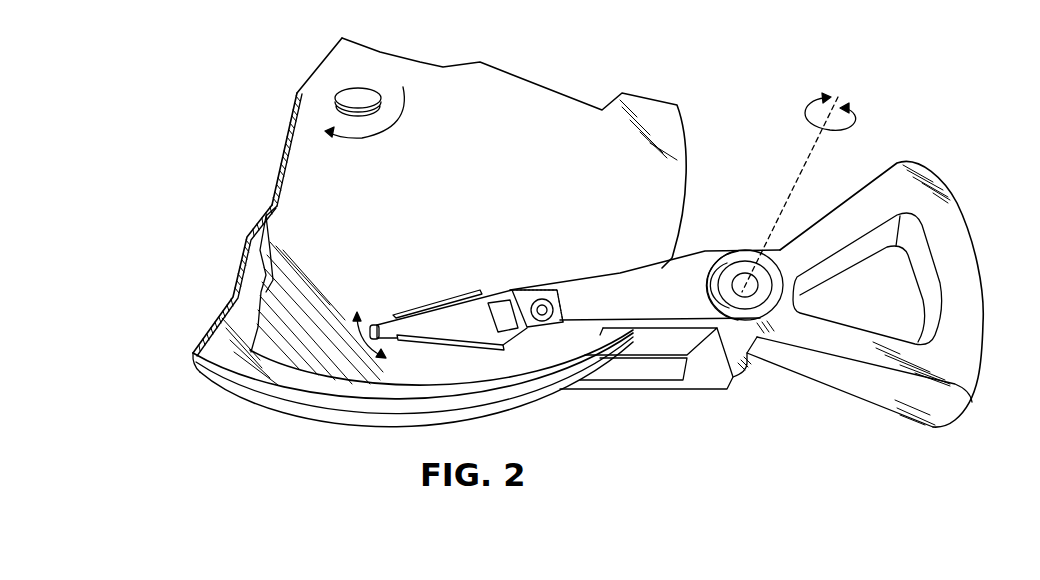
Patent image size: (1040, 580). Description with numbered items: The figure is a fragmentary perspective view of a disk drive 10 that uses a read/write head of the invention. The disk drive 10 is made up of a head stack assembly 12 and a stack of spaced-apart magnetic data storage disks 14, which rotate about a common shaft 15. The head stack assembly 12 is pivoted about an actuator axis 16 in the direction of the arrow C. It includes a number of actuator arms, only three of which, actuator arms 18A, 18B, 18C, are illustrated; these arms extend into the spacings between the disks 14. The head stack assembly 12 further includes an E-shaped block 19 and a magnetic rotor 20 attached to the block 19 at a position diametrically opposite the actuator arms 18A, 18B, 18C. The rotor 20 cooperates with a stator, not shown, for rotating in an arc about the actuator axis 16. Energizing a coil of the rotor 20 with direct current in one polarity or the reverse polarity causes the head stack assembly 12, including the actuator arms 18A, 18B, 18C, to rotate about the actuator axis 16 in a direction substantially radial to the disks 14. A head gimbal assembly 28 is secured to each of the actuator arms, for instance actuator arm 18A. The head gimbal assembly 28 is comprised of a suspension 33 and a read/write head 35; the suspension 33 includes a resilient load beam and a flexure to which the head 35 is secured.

The disk drive 10 is at (738, 48).
The head stack assembly 12 is at (722, 409).
The magnetic data storage disks 14 is at (502, 139).
The common shaft 15 is at (343, 95).
The actuator axis 16 is at (808, 152).
The actuator arm 18A is at (638, 266).
The actuator arm 18B is at (634, 352).
The actuator arm 18C is at (657, 381).
The E-shaped block 19 is at (728, 376).
The magnetic rotor 20 is at (850, 387).
The head gimbal assembly 28 is at (444, 288).
The suspension 33 is at (470, 331).
The read/write head 35 is at (372, 333).